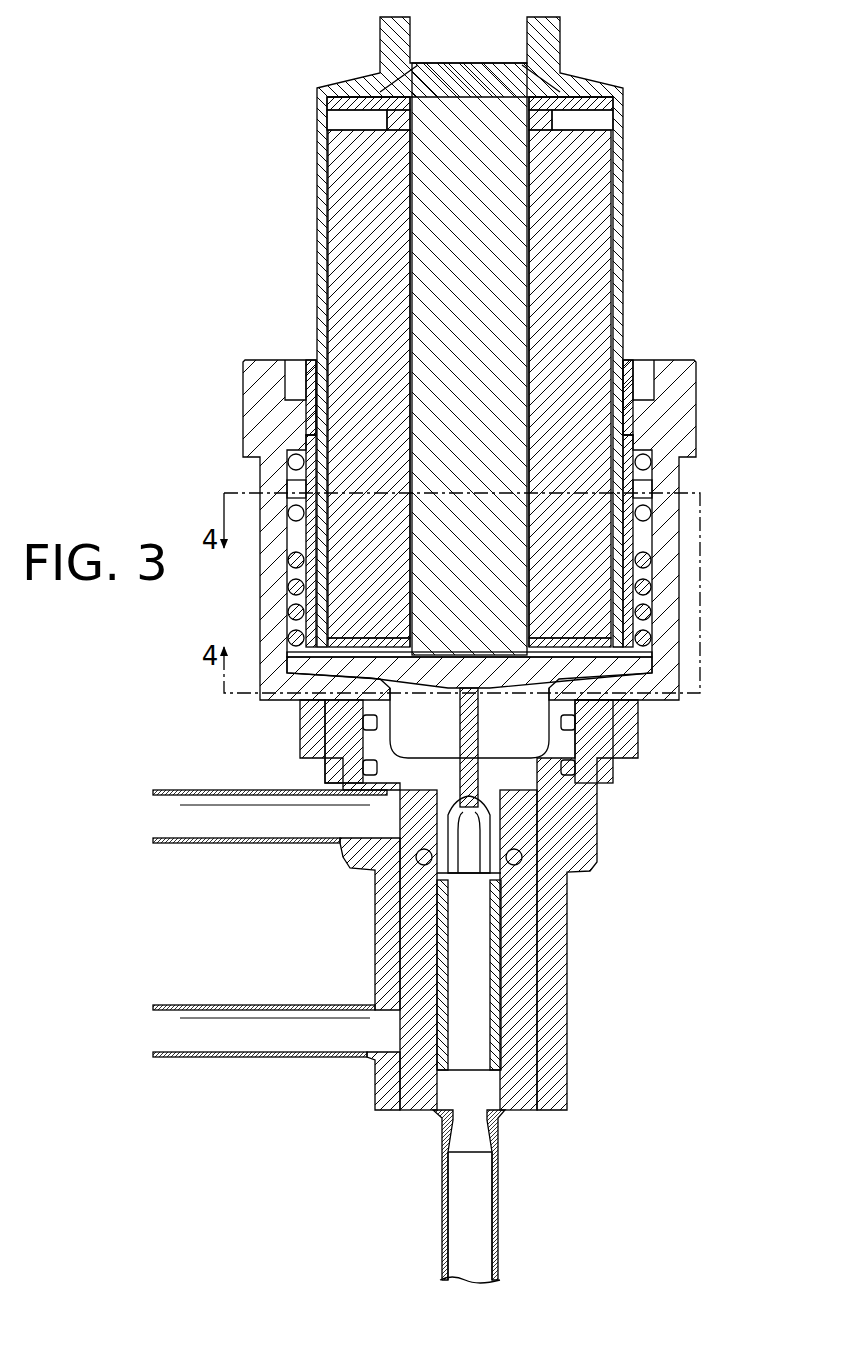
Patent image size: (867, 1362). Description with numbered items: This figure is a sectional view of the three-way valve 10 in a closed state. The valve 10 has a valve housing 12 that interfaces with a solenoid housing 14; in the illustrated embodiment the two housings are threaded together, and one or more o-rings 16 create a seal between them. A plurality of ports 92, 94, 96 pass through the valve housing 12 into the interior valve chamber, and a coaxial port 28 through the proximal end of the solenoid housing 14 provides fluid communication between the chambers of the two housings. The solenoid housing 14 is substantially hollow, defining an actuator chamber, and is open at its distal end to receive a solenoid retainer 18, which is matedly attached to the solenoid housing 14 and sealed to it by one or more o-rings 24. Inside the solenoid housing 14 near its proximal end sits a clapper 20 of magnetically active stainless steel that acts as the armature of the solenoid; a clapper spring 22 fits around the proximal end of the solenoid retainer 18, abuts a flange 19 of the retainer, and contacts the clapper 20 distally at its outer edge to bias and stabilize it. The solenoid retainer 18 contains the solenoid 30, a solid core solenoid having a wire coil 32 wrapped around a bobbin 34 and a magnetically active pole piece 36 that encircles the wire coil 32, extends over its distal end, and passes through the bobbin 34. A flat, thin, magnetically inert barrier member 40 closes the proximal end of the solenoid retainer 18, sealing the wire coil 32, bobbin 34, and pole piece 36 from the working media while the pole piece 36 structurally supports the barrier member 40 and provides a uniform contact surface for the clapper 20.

The three-way valve 10 is at (150, 60).
The valve housing 12 is at (585, 862).
The solenoid housing 14 is at (697, 412).
The o-rings 16 is at (365, 772).
The solenoid retainer 18 is at (658, 375).
The flange 19 is at (645, 490).
The clapper 20 is at (630, 662).
The clapper spring 22 is at (643, 583).
The o-rings 24 is at (643, 462).
The coaxial port 28 is at (488, 777).
The solenoid 30 is at (625, 165).
The wire coil 32 is at (337, 228).
The bobbin 34 is at (410, 182).
The pole piece 36 is at (497, 232).
The barrier member 40 is at (640, 645).
The port 92 is at (468, 1268).
The port 94 is at (175, 1020).
The port 96 is at (175, 805).